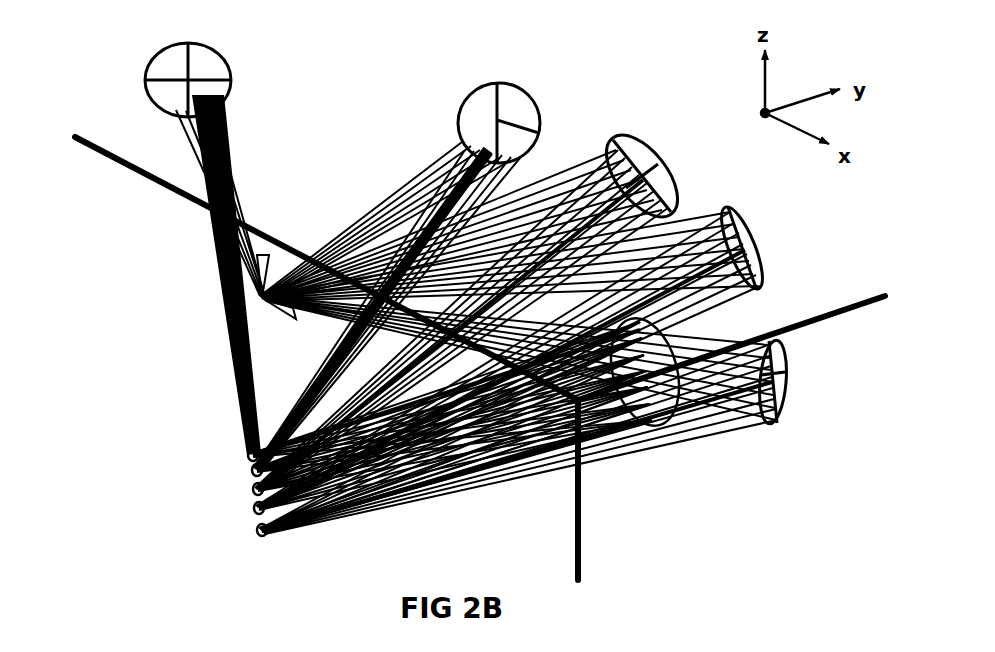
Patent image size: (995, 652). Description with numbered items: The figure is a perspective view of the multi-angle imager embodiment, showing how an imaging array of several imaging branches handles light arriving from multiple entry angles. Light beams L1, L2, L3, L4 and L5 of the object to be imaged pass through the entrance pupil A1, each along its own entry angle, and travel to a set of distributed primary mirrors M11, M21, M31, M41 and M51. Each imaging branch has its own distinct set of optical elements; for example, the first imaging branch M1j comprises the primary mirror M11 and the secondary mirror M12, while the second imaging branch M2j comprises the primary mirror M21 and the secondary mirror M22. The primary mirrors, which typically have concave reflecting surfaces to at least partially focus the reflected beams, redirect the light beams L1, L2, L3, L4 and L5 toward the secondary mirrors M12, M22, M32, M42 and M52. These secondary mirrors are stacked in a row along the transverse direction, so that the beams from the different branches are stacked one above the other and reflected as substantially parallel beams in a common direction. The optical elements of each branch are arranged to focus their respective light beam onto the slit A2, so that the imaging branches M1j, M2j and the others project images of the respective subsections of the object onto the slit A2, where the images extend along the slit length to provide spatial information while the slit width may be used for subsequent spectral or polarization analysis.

The primary mirror M11 is at (188, 69).
The primary mirror M21 is at (499, 112).
The primary mirror M31 is at (650, 176).
The primary mirror M41 is at (742, 232).
The primary mirror M51 is at (802, 382).
The secondary mirror M12 is at (240, 455).
The secondary mirror M22 is at (240, 472).
The secondary mirror M32 is at (240, 490).
The secondary mirror M42 is at (240, 510).
The secondary mirror M52 is at (240, 533).
The imaging branch M1j is at (144, 398).
The imaging branch M2j is at (440, 135).
The entrance pupil A1 is at (255, 298).
The slit A2 is at (632, 411).
The light beam L1 is at (252, 383).
The light beam L2 is at (342, 388).
The light beam L3 is at (414, 395).
The light beam L4 is at (492, 405).
The light beam L5 is at (552, 458).